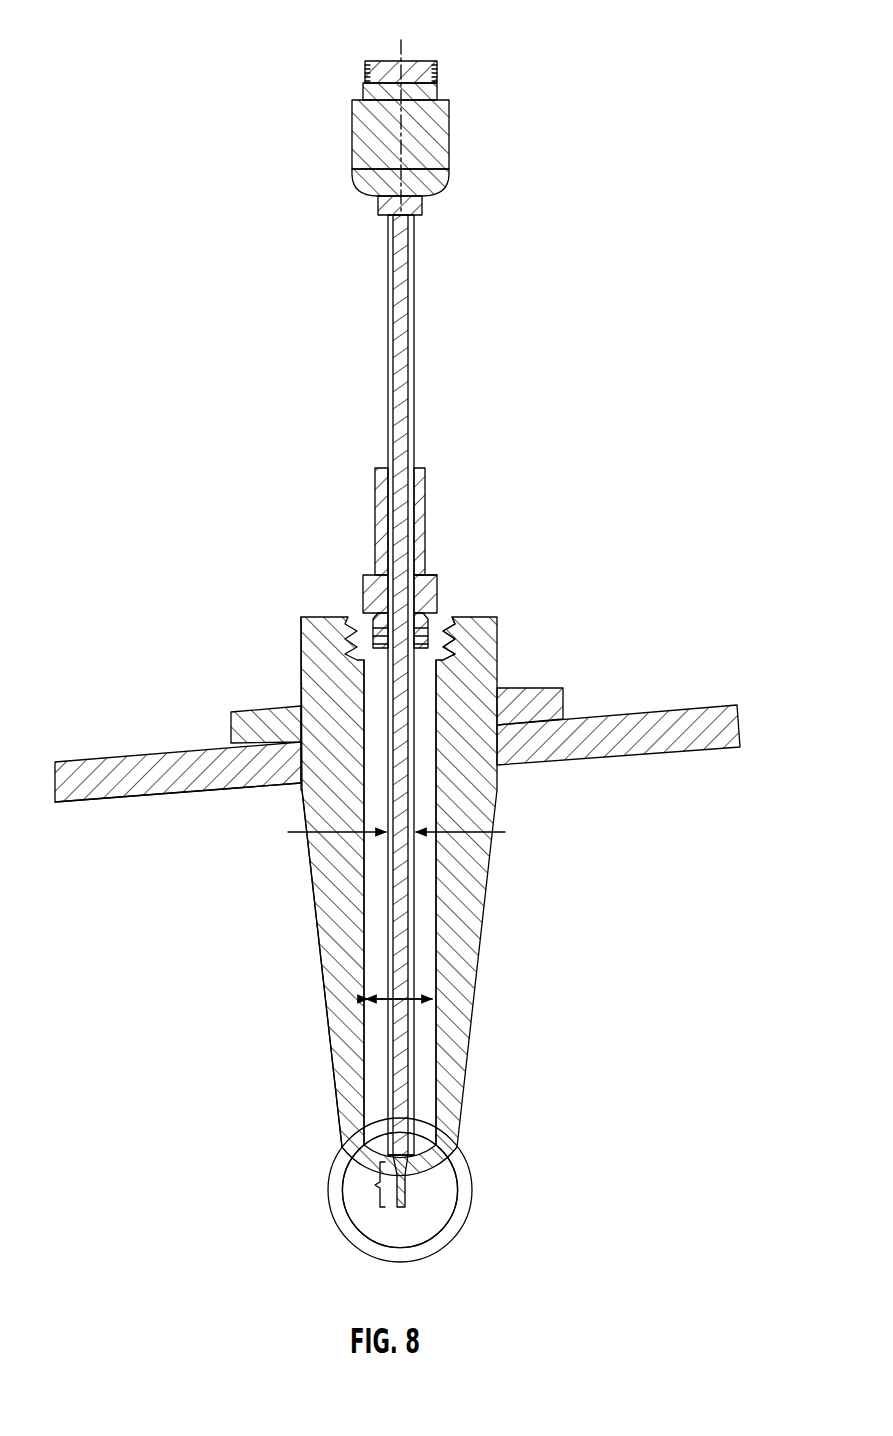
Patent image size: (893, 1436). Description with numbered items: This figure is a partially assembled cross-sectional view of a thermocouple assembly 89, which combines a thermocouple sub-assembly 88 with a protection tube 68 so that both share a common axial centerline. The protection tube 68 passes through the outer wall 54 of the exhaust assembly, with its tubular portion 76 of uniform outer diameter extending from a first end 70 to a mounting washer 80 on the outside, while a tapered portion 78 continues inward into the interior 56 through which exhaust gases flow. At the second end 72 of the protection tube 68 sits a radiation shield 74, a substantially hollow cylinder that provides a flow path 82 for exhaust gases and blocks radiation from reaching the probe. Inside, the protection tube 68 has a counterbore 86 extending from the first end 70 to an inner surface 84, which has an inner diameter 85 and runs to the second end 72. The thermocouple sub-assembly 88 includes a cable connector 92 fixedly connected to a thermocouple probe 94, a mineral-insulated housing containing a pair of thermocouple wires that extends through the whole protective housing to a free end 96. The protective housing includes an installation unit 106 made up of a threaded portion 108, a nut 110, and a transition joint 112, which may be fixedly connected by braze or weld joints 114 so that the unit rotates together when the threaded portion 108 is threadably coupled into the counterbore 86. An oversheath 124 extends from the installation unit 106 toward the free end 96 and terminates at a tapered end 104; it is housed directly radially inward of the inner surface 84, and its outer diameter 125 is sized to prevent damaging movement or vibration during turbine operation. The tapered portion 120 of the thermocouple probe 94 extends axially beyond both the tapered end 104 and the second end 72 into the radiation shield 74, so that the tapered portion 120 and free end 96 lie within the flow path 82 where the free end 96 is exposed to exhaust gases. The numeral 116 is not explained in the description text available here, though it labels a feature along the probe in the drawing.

The thermocouple assembly 89 is at (155, 94).
The thermocouple sub-assembly 88 is at (455, 77).
The cable connector 92 is at (432, 136).
The thermocouple probe 94 is at (409, 297).
The inner rod 116 is at (409, 405).
The oversheath 124 is at (425, 506).
The installation unit 106 is at (316, 494).
The transition joint 112 is at (375, 492).
The nut 110 is at (368, 578).
The braze joint or weld joint 114 is at (431, 574).
The threaded portion 108 is at (362, 628).
The counterbore 86 is at (446, 638).
The first end 70 is at (500, 617).
The tubular portion 76 is at (300, 682).
The tapered portion 78 is at (316, 924).
The mounting washer 80 is at (543, 688).
The outer wall 54 is at (677, 706).
The interior 56 is at (210, 936).
The outer diameter 125 is at (504, 832).
The inner surface 84 is at (436, 915).
The protection tube 68 is at (524, 926).
The inner diameter 85 is at (412, 995).
The tapered end 104 is at (416, 1153).
The second end 72 is at (457, 1147).
The tapered portion 120 is at (368, 1185).
The free end 96 is at (405, 1207).
The radiation shield 74 is at (356, 1242).
The flow path 82 is at (398, 1226).